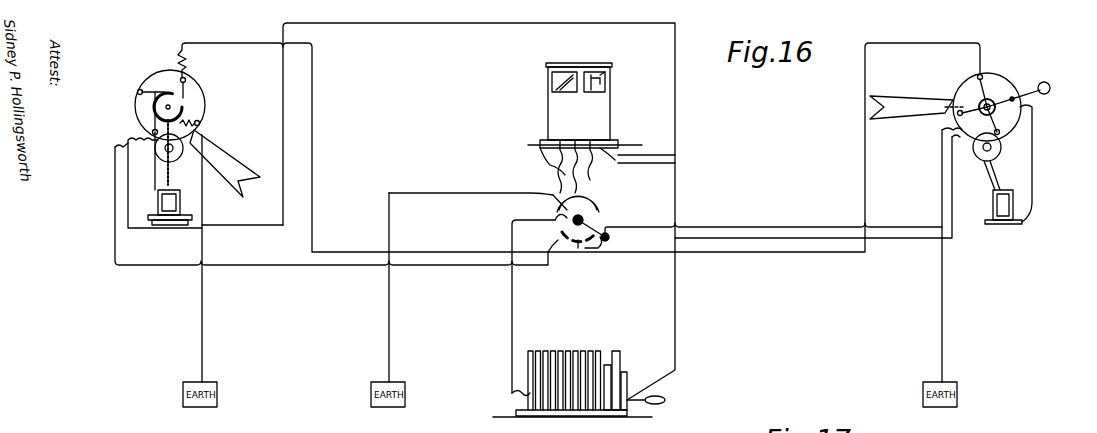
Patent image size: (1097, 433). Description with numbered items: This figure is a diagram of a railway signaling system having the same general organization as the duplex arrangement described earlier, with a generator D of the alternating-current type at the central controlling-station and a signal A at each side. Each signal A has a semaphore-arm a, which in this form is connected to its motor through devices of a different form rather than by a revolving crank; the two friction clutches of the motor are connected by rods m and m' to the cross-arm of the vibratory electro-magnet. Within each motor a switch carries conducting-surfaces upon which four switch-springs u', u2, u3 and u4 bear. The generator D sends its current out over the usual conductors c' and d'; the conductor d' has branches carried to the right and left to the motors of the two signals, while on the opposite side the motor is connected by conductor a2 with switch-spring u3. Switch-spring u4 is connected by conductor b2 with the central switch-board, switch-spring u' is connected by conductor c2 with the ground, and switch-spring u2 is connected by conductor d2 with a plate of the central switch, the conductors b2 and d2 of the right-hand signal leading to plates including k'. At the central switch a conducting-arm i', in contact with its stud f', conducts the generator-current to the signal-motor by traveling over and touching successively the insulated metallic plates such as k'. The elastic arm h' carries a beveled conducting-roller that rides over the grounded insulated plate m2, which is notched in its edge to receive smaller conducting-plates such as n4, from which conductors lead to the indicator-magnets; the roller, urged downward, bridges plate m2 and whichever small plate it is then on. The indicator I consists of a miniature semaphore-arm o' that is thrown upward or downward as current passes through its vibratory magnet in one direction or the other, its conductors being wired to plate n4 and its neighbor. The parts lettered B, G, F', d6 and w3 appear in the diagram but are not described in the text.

The signal A is at (580, 95).
The semaphore-arm a is at (577, 146).
The conductor a2 is at (585, 183).
The battery B is at (585, 207).
The conductor b2 is at (539, 285).
The conductor c' is at (523, 394).
The conductor c2 is at (206, 204).
The generator D is at (579, 373).
The conductor d' is at (588, 139).
The conductor d2 is at (579, 142).
The wire d6 is at (951, 256).
The switch disk G is at (176, 102).
The rod m is at (582, 155).
The rod m' is at (994, 173).
The insulated plate m2 is at (602, 204).
The insulated conducting-plate n4 is at (546, 190).
The arm h' is at (548, 210).
The stud f' is at (582, 212).
The switch lever F' is at (598, 223).
The metallic plate k' is at (636, 213).
The conducting-arm i' is at (575, 242).
The indicator I is at (599, 128).
The miniature semaphore-arm o' is at (586, 71).
The switch-spring u' is at (579, 122).
The switch-spring u2 is at (593, 89).
The switch-spring u3 is at (152, 83).
The switch-spring u4 is at (582, 117).
The handle w3 is at (1012, 95).